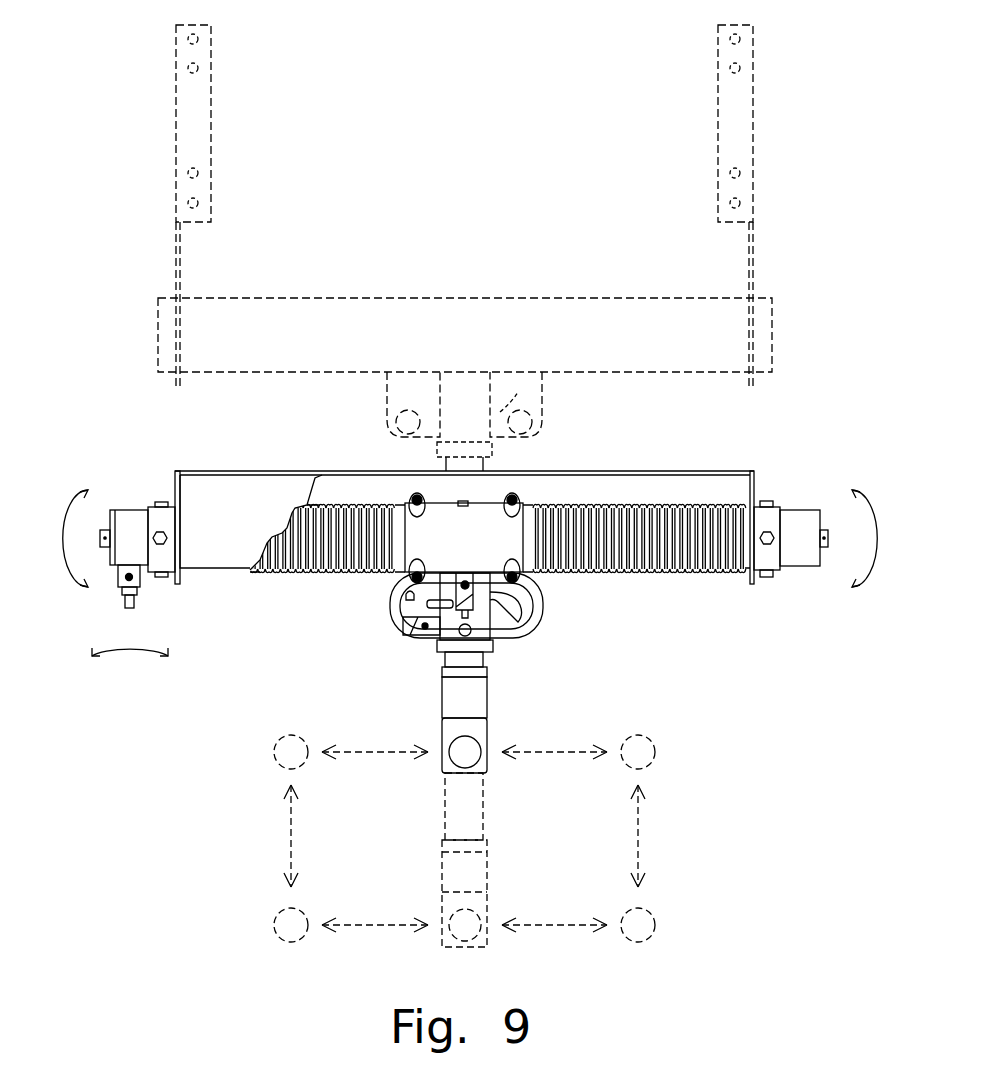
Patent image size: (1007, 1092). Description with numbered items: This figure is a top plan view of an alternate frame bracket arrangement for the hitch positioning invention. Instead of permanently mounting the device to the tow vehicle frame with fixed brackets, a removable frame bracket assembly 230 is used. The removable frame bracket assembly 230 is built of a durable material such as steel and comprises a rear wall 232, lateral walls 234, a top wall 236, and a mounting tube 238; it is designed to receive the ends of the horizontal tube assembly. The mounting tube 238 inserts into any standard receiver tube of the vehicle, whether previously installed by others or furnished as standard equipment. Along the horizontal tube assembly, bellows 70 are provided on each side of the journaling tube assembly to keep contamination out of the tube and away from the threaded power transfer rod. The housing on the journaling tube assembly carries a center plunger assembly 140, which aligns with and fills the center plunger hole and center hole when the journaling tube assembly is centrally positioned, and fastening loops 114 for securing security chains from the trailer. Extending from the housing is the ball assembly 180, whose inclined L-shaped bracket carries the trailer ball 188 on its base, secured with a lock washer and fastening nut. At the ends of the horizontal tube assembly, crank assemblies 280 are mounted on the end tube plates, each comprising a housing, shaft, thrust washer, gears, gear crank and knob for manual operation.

The bellows 70 is at (677, 540).
The fastening loops 114 is at (397, 600).
The center plunger assembly 140 is at (481, 593).
The ball assembly 180 is at (491, 728).
The trailer ball 188 is at (463, 752).
The removable frame bracket assembly 230 is at (492, 488).
The rear wall 232 is at (657, 470).
The lateral walls 234 is at (755, 490).
The top wall 236 is at (245, 487).
The mounting tube 238 is at (477, 462).
The crank assemblies 280 is at (764, 580).